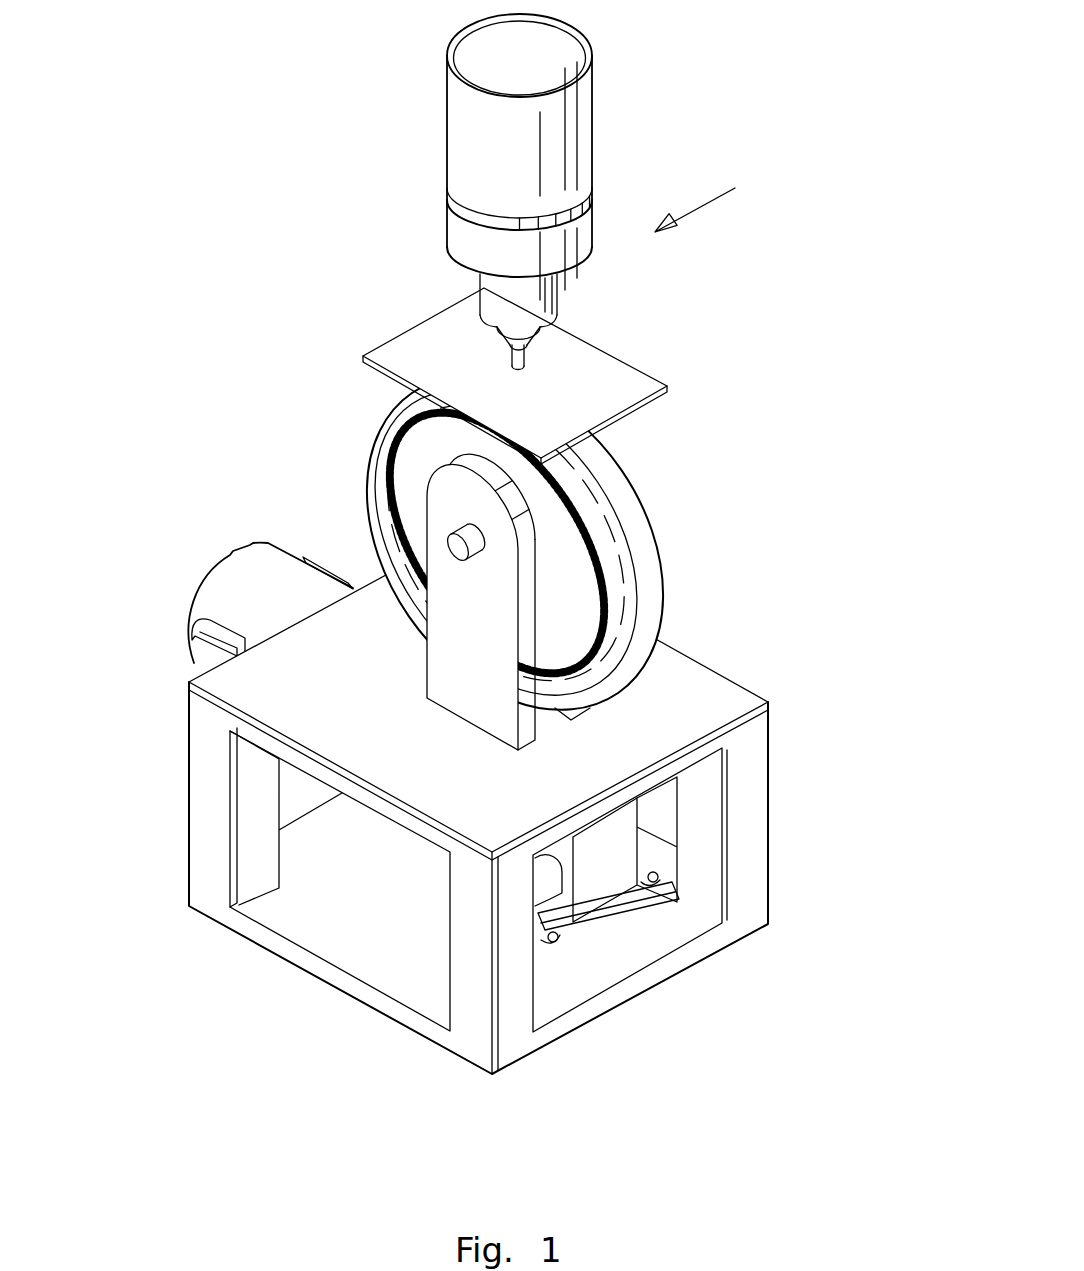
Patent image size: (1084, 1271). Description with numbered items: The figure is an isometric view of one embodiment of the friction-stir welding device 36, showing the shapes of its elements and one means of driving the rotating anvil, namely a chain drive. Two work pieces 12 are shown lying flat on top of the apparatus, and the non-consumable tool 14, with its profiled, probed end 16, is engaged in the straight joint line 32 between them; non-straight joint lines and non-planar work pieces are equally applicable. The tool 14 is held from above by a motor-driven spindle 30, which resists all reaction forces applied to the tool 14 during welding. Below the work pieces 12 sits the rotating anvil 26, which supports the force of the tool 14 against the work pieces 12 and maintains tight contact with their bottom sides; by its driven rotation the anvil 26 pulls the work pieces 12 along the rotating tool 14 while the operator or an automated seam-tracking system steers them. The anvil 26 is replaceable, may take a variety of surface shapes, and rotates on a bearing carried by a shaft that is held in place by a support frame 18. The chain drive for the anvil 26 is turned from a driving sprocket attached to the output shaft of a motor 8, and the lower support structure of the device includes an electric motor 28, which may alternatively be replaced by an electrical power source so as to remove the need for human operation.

The motor 8 is at (618, 835).
The work pieces 12 is at (633, 383).
The non-consumable tool 14 is at (548, 362).
The profiled, probed end 16 is at (513, 367).
The support frame 18 is at (445, 503).
The rotating anvil 26 is at (642, 540).
The electric motor 28 is at (233, 588).
The motor-driven spindle 30 is at (558, 113).
The joint line 32 is at (473, 343).
The friction-stir welding device 36 is at (735, 188).